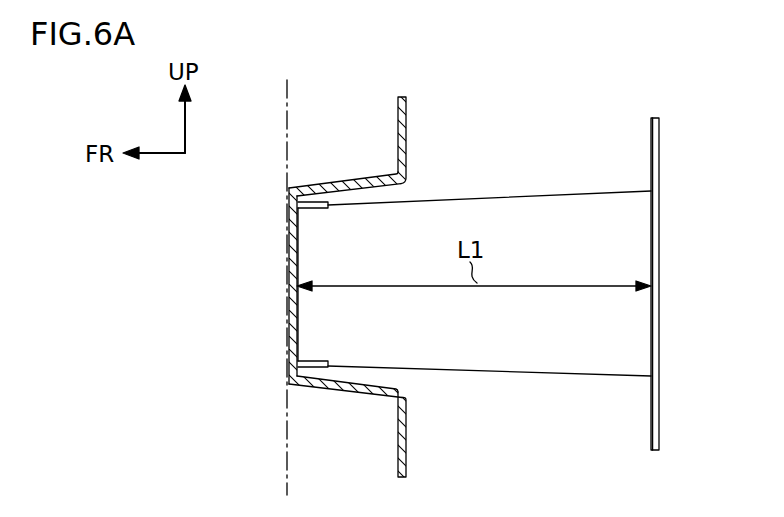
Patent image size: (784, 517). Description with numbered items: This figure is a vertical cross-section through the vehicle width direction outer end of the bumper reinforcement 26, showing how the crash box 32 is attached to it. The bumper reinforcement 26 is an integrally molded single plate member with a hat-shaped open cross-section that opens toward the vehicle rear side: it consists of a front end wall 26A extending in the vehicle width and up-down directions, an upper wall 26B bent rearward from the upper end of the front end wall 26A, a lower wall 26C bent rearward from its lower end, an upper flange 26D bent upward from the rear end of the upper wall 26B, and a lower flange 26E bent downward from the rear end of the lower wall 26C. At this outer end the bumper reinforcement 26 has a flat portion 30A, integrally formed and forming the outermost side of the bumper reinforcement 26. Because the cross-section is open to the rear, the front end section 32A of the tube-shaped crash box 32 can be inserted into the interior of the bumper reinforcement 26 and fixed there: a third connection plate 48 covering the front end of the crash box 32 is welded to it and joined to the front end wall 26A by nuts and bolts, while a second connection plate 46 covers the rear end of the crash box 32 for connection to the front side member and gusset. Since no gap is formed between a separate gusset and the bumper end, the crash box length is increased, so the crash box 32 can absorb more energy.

The bumper reinforcement 26 is at (311, 387).
The front end wall 26A is at (290, 298).
The upper wall 26B is at (365, 177).
The lower wall 26C is at (357, 392).
The upper flange 26D is at (407, 118).
The lower flange 26E is at (407, 450).
The flat portion 30A is at (296, 344).
The crash box 32 is at (539, 195).
The front end section of the crash box 32A is at (323, 238).
The second connection plate 46 is at (660, 150).
The third connection plate 48 is at (302, 325).